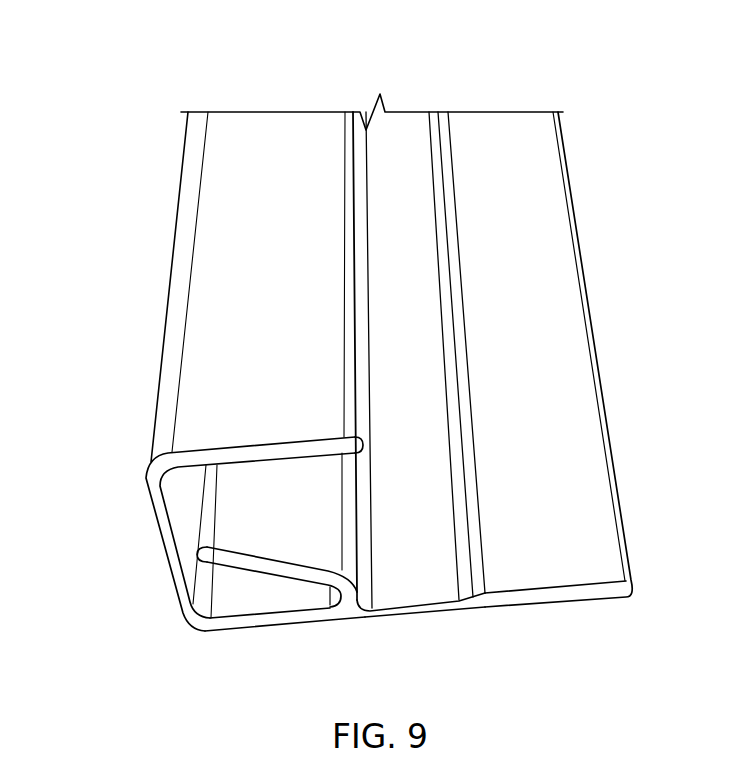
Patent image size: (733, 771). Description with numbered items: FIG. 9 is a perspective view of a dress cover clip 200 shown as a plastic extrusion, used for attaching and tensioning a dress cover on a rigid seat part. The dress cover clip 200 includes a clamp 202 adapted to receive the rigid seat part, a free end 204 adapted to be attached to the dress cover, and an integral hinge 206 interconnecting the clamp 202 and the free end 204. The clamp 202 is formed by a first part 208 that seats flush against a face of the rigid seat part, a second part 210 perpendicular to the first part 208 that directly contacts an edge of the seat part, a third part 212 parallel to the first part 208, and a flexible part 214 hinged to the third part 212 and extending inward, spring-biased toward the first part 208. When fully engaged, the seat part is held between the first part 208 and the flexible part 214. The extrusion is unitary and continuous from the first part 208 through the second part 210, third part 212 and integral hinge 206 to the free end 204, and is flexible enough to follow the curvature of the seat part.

The dress cover clip 200 is at (147, 58).
The clamp 202 is at (118, 354).
The free end 204 is at (580, 444).
The integral hinge 206 is at (427, 608).
The first part 208 is at (227, 254).
The second part 210 is at (163, 540).
The third part 212 is at (300, 624).
The flexible part 214 is at (240, 555).